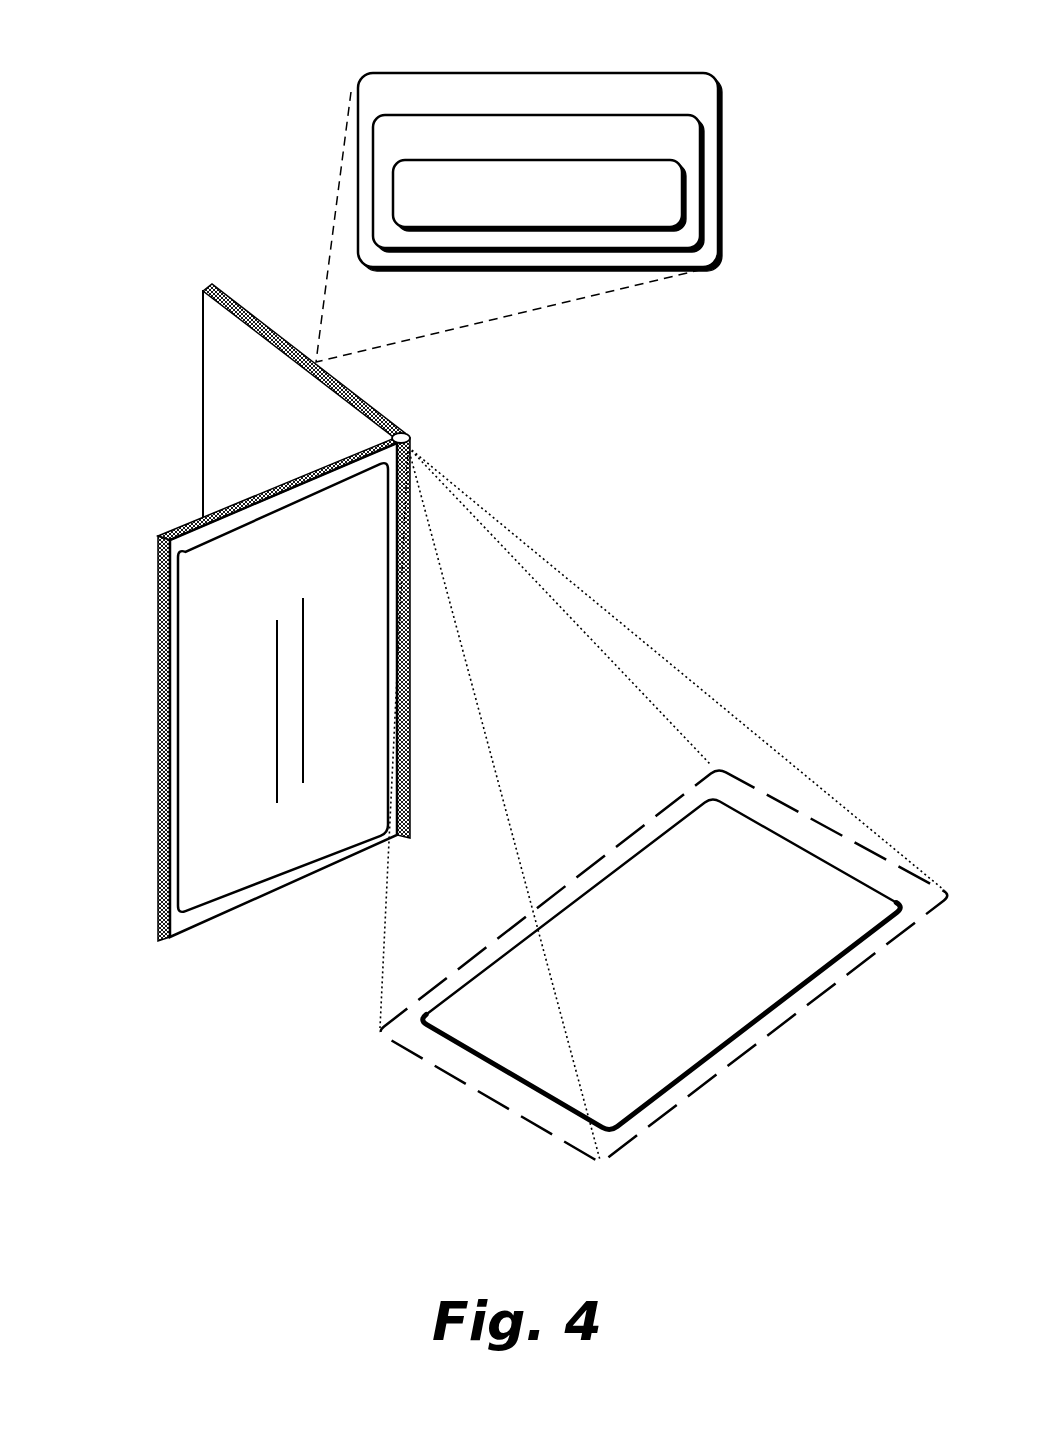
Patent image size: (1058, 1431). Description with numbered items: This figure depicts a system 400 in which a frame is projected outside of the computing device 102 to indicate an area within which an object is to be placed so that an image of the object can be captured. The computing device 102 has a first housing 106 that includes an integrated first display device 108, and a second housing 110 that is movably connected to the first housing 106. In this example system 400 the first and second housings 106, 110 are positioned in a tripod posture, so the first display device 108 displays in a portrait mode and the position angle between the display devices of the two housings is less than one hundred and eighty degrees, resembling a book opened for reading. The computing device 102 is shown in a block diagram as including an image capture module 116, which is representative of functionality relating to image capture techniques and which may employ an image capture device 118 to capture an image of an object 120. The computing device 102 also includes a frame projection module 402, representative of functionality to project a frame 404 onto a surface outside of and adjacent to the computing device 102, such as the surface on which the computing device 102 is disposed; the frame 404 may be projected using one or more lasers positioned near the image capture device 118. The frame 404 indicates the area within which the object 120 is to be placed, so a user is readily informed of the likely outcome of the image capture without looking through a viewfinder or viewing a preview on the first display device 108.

The system 400 is at (168, 60).
The computing device 102 is at (658, 107).
The image capture module 116 is at (685, 152).
The frame projection module 402 is at (600, 221).
The second housing 110 is at (370, 403).
The image capture device 118 is at (411, 437).
The first housing 106 is at (158, 535).
The first display device 108 is at (192, 750).
The object 120 is at (668, 848).
The frame 404 is at (474, 1098).